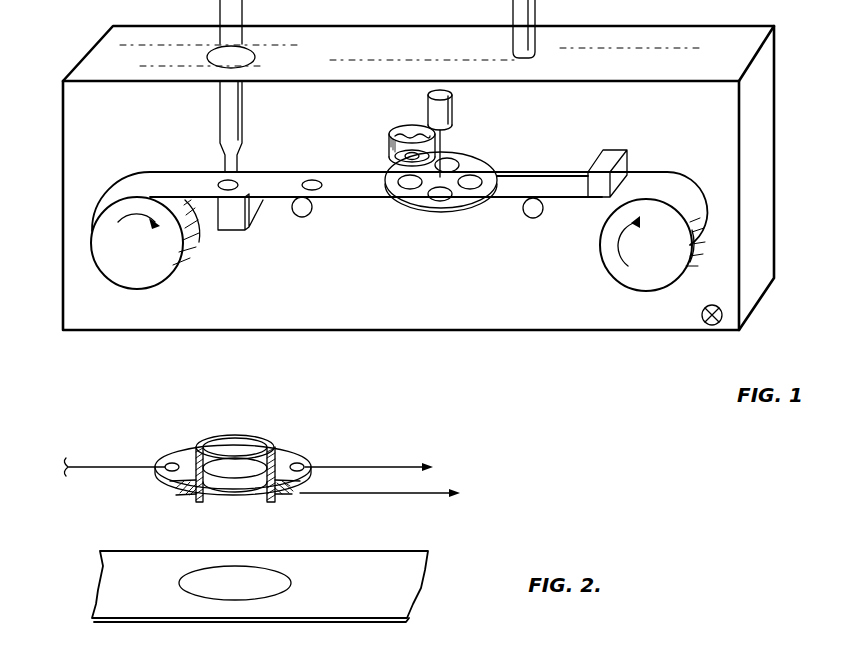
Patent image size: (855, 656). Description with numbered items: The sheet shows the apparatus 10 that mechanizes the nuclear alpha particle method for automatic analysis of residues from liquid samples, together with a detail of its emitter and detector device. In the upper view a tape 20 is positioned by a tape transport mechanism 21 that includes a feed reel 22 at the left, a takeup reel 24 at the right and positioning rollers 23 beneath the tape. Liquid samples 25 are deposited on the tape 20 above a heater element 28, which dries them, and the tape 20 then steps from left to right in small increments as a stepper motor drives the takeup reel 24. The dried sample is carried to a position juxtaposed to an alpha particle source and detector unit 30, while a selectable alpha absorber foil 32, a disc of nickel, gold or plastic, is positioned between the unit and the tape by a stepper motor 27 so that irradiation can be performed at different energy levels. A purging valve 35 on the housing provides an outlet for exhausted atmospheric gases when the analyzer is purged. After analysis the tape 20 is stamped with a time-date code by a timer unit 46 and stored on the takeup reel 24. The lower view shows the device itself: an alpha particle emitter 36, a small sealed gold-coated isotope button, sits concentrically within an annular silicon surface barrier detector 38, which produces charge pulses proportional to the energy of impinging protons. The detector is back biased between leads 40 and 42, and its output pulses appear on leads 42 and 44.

In FIG. 1, the apparatus 10 is at (745, 24).
In FIG. 1, the tape 20 is at (510, 183).
In FIG. 2, the tape 20 is at (94, 579).
In FIG. 1, the tape transport mechanism 21 is at (107, 188).
In FIG. 1, the feed reel 22 is at (155, 268).
In FIG. 1, the positioning rollers 23 is at (302, 217).
In FIG. 1, the takeup reel 24 is at (612, 258).
In FIG. 1, the liquid samples 25 is at (241, 181).
In FIG. 2, the liquid samples 25 is at (240, 600).
In FIG. 1, the stepper motor 27 is at (452, 114).
In FIG. 1, the heater element 28 is at (235, 222).
In FIG. 1, the alpha particle source and detector unit 30 is at (393, 117).
In FIG. 1, the selectable alpha absorber foil 32 is at (481, 159).
In FIG. 1, the purging valve 35 is at (706, 326).
In FIG. 1, the alpha particle emitter 36 is at (411, 160).
In FIG. 2, the alpha particle emitter 36 is at (240, 460).
In FIG. 1, the annular silicon surface barrier detector 38 is at (390, 152).
In FIG. 2, the annular silicon surface barrier detector 38 is at (199, 434).
In FIG. 2, the lead 40 is at (116, 466).
In FIG. 2, the lead 42 is at (388, 494).
In FIG. 2, the lead 44 is at (372, 466).
In FIG. 1, the timer unit 46 is at (618, 151).